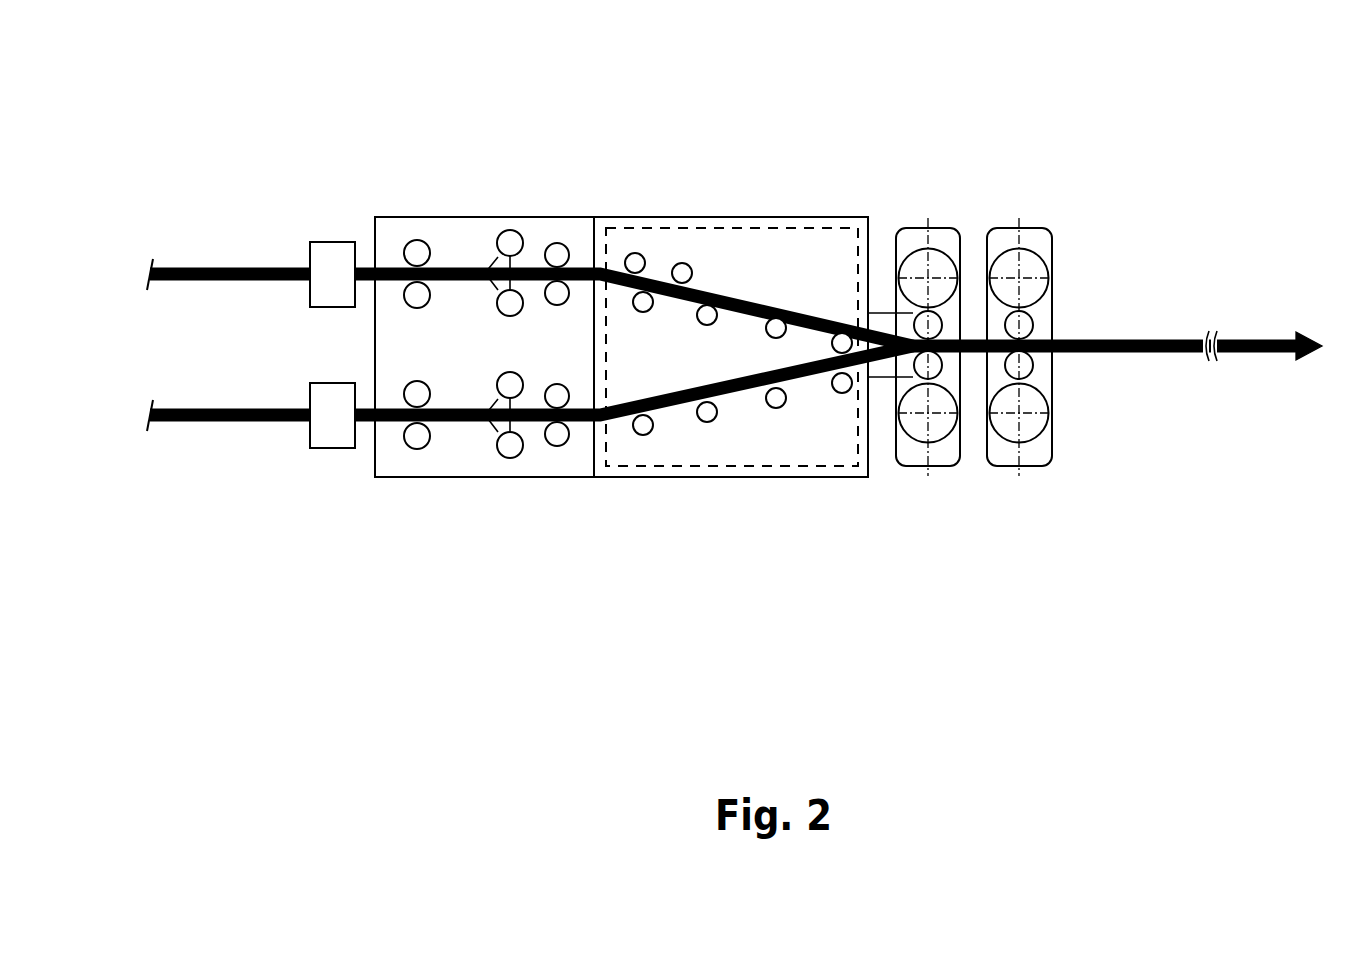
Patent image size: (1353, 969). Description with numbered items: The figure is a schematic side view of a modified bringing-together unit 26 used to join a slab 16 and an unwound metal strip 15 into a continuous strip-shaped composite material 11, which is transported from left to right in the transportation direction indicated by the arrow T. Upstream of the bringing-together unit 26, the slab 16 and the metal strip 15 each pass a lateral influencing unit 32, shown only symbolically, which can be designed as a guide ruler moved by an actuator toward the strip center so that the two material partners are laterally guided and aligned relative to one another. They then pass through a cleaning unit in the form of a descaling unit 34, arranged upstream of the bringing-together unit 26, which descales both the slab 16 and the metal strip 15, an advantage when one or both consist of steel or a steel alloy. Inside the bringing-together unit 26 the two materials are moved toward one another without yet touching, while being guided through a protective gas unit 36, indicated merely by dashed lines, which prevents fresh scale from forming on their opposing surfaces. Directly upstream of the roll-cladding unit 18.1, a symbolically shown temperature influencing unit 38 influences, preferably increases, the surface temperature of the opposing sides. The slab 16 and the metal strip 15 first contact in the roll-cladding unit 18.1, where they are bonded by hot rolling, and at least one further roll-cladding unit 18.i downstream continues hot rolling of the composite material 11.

The unwound metal strip 15 is at (230, 267).
The slab 16 is at (203, 422).
The lateral influencing unit 32 is at (331, 242).
The descaling unit 34 is at (479, 217).
The bringing-together unit 26 is at (686, 217).
The protective gas unit 36 is at (795, 228).
The temperature influencing unit 38 is at (884, 313).
The roll-cladding unit 18.1 is at (937, 226).
The further roll-cladding unit 18.i is at (1027, 226).
The strip-shaped composite material 11 is at (1162, 340).
The transportation direction T is at (1310, 340).